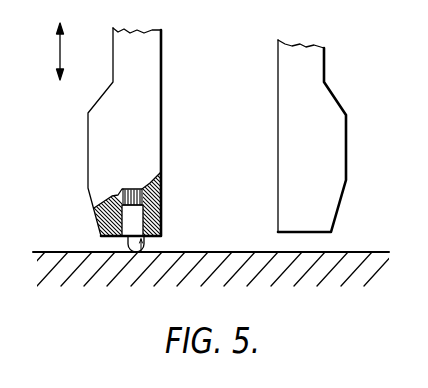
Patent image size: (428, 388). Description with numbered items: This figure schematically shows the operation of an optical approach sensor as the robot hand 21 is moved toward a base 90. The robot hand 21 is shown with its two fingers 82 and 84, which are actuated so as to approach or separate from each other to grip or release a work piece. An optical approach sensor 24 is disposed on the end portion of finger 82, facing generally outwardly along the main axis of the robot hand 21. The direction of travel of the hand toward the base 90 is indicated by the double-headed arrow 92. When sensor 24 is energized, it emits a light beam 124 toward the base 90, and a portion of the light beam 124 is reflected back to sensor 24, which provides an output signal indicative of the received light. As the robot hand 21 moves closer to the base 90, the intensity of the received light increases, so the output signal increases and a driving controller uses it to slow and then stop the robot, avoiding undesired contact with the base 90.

The robot hand 21 is at (233, 121).
The optical approach sensor 24 is at (160, 216).
The finger 82 is at (88, 143).
The finger 84 is at (347, 158).
The base 90 is at (366, 251).
The vertical movement direction 92 is at (59, 50).
The light beam 124 is at (126, 247).